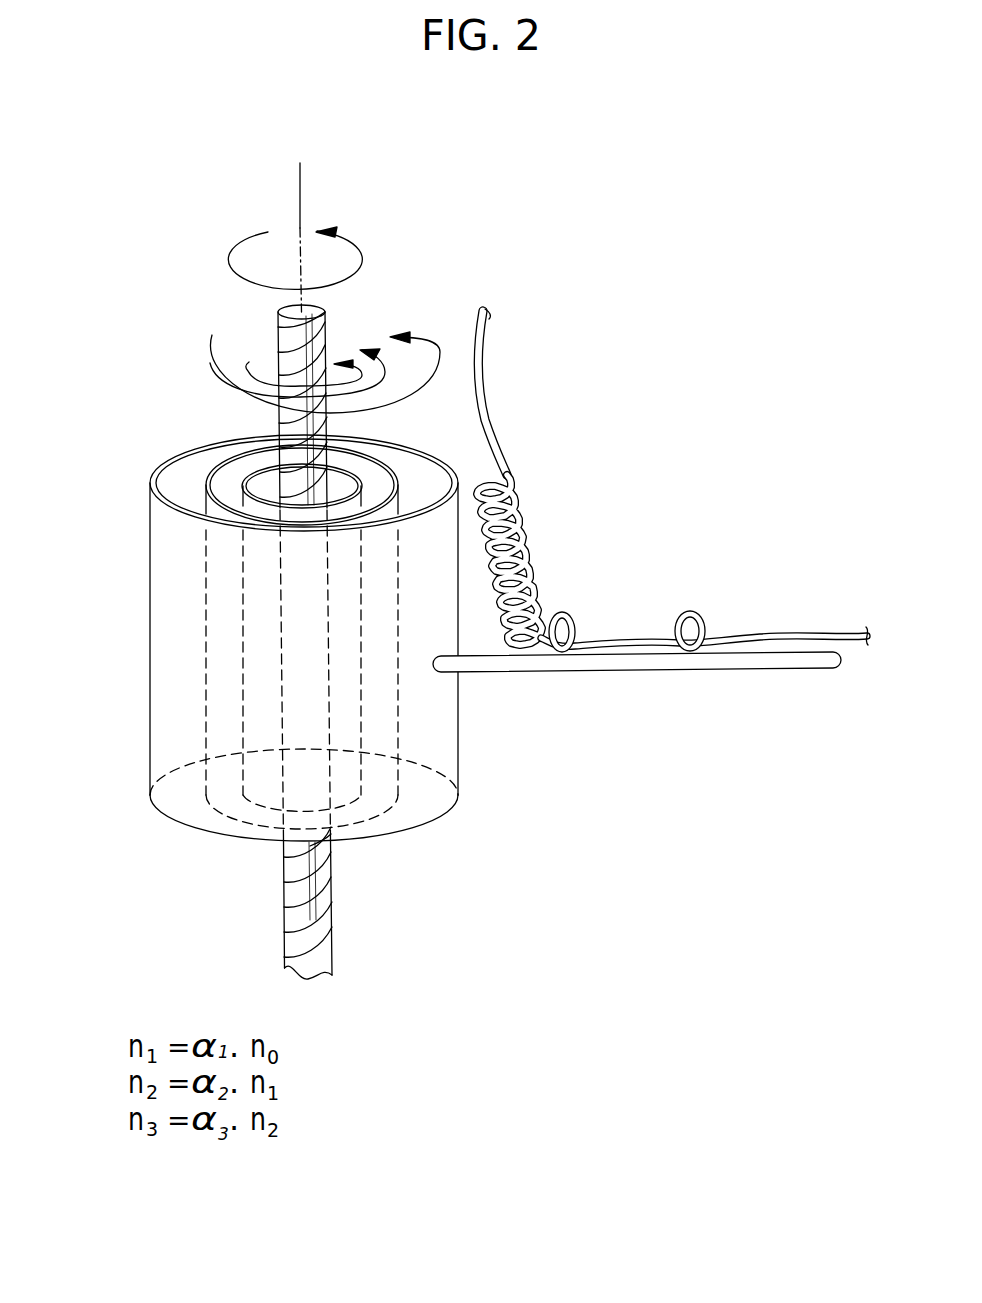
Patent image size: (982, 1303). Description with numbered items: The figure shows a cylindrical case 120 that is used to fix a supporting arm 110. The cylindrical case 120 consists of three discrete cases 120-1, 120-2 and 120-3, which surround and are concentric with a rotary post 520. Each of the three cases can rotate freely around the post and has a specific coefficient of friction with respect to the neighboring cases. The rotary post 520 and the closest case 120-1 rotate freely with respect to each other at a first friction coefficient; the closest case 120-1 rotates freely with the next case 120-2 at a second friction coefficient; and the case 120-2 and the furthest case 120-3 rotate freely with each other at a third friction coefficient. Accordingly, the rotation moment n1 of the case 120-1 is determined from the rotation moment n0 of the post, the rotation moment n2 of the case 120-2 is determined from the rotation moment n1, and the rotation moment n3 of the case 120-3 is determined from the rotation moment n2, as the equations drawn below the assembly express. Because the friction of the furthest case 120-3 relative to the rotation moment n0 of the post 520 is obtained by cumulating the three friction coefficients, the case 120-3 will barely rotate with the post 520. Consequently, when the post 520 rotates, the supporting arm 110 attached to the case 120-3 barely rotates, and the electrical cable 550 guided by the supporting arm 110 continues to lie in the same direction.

The supporting arm 110 is at (733, 671).
The cylindrical case 120 is at (336, 595).
The closest case 120-1 is at (250, 470).
The next case 120-2 is at (215, 467).
The furthest case 120-3 is at (178, 510).
The rotary post 520 is at (278, 340).
The electrical cable 550 is at (767, 633).
The rotation moment of the post n0 is at (363, 244).
The rotation moment of case 120-1 n1 is at (350, 380).
The rotation moment of case 120-2 n2 is at (438, 355).
The rotation moment of case 120-3 n3 is at (478, 358).